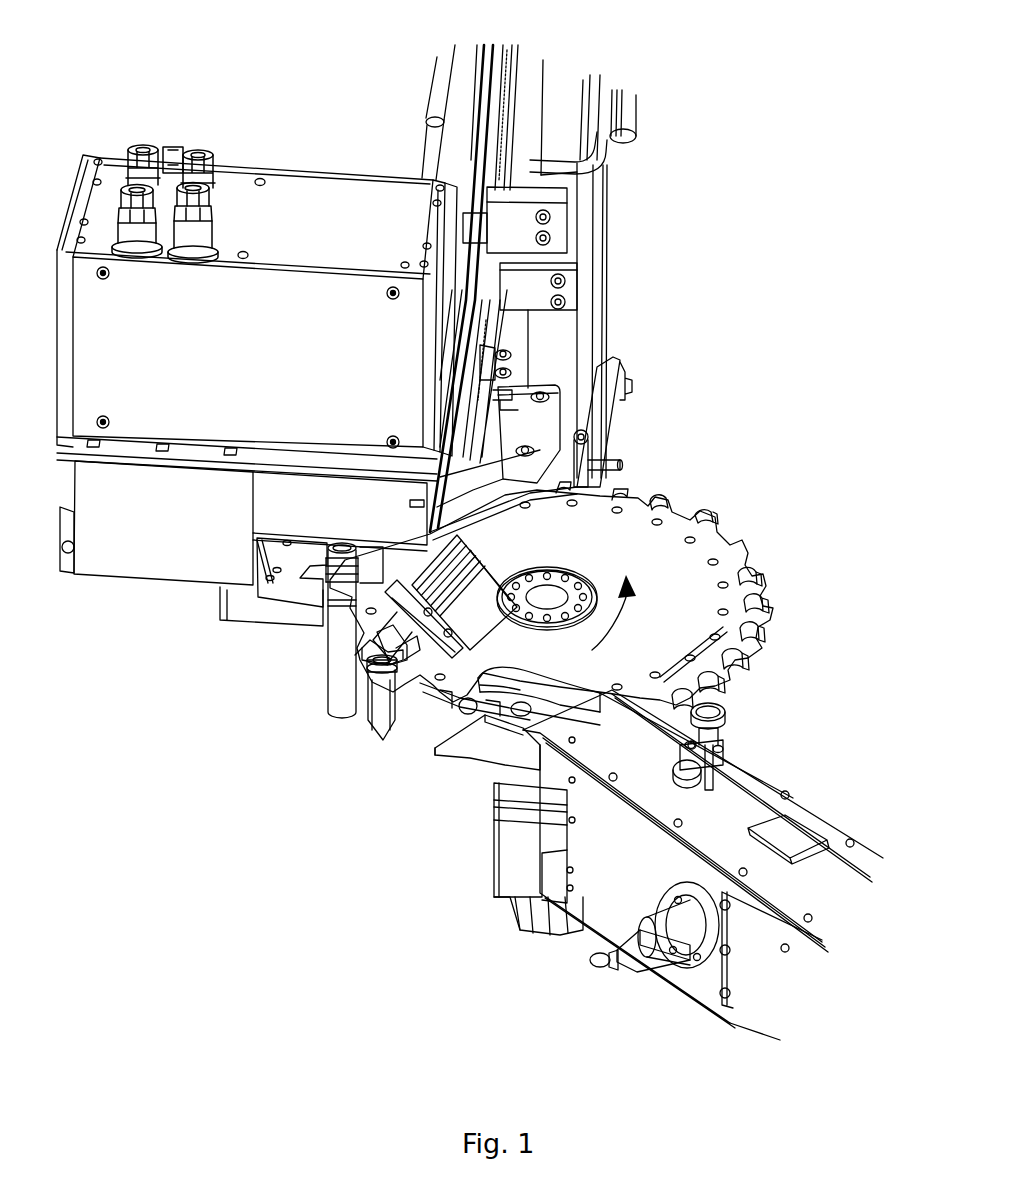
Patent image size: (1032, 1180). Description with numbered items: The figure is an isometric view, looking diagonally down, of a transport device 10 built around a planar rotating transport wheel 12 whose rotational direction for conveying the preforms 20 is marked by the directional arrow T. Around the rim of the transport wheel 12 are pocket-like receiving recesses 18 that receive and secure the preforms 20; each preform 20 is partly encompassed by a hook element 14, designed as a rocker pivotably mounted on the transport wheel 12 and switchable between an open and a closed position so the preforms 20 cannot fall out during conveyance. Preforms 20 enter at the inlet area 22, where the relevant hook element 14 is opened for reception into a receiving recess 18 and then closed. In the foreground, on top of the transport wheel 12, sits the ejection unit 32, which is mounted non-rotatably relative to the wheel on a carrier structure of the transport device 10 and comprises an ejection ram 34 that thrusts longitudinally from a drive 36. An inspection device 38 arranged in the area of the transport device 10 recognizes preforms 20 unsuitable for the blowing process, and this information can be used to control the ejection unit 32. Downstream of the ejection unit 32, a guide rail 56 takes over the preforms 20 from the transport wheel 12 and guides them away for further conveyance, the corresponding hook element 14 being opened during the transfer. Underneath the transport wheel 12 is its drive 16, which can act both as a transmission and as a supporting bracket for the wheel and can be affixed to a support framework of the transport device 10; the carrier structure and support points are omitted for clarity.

The transport device 10 is at (692, 466).
The transport wheel 12 is at (742, 578).
The hook element 14 is at (703, 512).
The drive 16 is at (500, 870).
The receiving recess 18 is at (758, 640).
The preform 20 is at (382, 723).
The inlet area 22 is at (652, 340).
The ejection unit 32 is at (379, 624).
The ejection ram 34 is at (332, 650).
The drive 36 is at (503, 568).
The inspection device 38 is at (278, 104).
The guide rail 56 is at (457, 755).